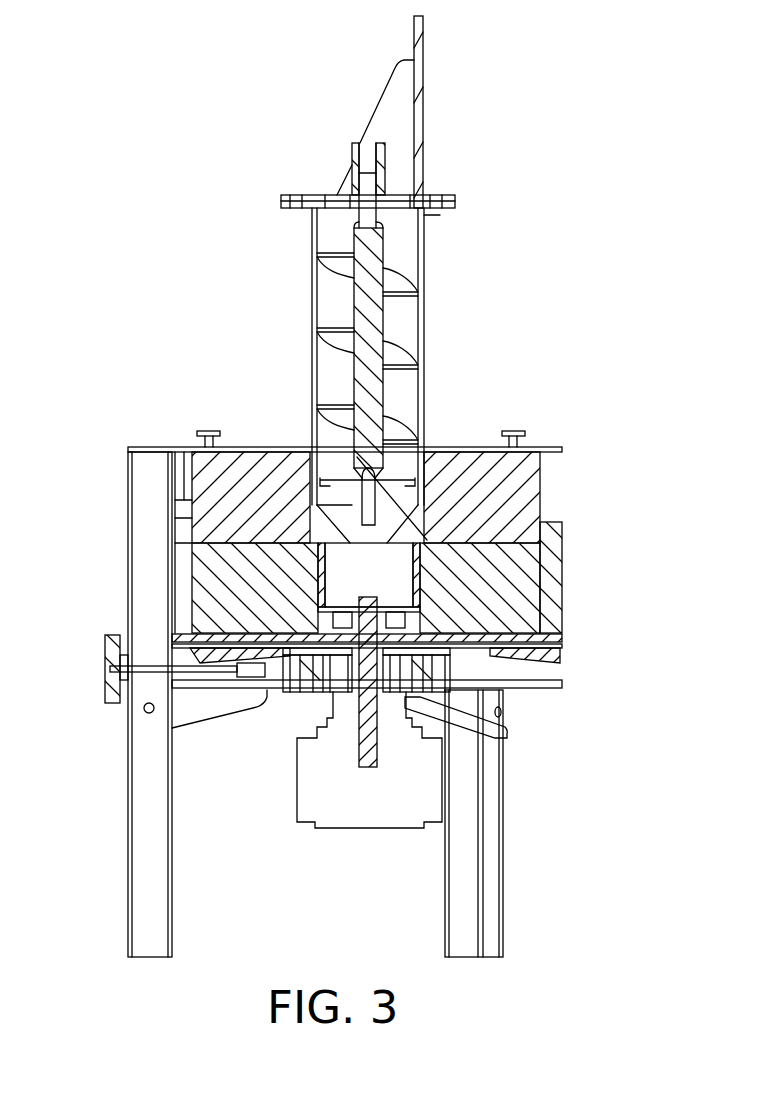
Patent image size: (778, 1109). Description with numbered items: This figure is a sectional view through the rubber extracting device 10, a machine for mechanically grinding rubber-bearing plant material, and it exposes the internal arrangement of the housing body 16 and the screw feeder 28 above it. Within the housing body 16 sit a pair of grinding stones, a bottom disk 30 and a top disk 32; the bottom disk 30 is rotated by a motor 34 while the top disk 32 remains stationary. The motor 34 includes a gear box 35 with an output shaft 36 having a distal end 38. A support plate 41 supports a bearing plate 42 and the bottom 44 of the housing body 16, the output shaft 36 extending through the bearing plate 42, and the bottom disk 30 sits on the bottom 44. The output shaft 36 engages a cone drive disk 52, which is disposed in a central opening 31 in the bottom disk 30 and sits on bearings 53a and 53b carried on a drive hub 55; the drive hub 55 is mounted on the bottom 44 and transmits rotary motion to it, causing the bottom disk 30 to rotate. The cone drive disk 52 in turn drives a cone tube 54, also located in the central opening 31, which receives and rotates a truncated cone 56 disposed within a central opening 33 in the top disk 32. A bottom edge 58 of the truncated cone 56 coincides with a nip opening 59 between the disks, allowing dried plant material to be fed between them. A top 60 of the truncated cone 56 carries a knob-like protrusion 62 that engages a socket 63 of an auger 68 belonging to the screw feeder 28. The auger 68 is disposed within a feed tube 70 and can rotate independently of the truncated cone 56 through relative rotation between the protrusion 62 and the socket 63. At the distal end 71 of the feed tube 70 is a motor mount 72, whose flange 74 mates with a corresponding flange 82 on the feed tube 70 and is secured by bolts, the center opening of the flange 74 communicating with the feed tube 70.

The rubber extracting device 10 is at (150, 180).
The housing body 16 is at (562, 540).
The screw feeder 28 is at (330, 298).
The bottom disk 30 is at (510, 600).
The central opening 31 is at (423, 563).
The top disk 32 is at (455, 455).
The central opening 33 is at (417, 500).
The motor 34 is at (326, 798).
The gear box 35 is at (318, 697).
The output shaft 36 is at (385, 740).
The distal end 38 is at (272, 690).
The support plate 41 is at (480, 686).
The bearing plate 42 is at (480, 628).
The bottom 44 is at (562, 640).
The cone drive disk 52 is at (325, 610).
The bearing 53a is at (340, 622).
The bearing 53b is at (400, 625).
The cone tube 54 is at (305, 572).
The drive hub 55 is at (385, 660).
The truncated cone 56 is at (340, 500).
The bottom edge 58 is at (320, 560).
The nip opening 59 is at (335, 540).
The top 60 is at (418, 500).
The protrusion 62 is at (365, 465).
The socket 63 is at (390, 465).
The auger 68 is at (385, 325).
The feed tube 70 is at (312, 240).
The distal end 71 is at (430, 222).
The motor mount 72 is at (380, 96).
The flange 74 is at (452, 195).
The flange 82 is at (452, 210).